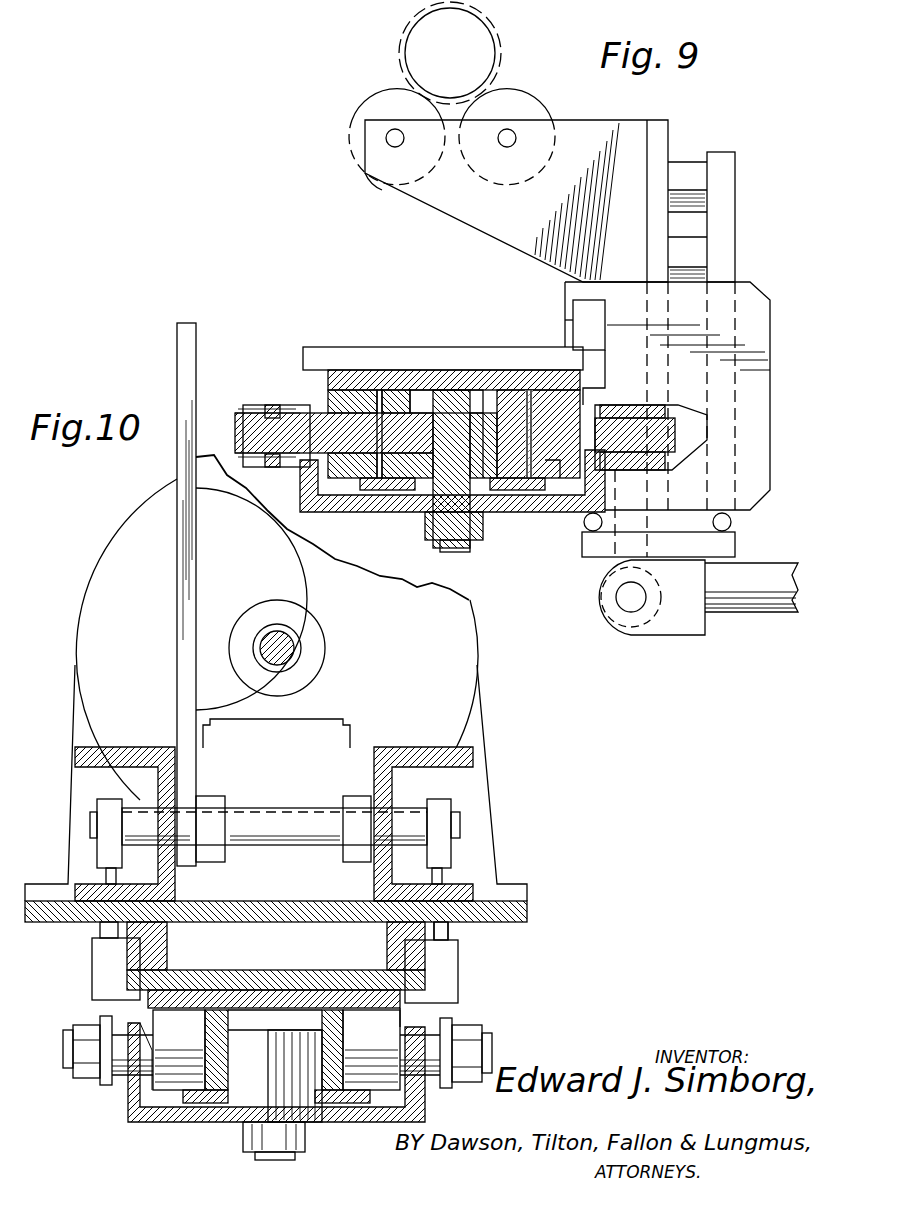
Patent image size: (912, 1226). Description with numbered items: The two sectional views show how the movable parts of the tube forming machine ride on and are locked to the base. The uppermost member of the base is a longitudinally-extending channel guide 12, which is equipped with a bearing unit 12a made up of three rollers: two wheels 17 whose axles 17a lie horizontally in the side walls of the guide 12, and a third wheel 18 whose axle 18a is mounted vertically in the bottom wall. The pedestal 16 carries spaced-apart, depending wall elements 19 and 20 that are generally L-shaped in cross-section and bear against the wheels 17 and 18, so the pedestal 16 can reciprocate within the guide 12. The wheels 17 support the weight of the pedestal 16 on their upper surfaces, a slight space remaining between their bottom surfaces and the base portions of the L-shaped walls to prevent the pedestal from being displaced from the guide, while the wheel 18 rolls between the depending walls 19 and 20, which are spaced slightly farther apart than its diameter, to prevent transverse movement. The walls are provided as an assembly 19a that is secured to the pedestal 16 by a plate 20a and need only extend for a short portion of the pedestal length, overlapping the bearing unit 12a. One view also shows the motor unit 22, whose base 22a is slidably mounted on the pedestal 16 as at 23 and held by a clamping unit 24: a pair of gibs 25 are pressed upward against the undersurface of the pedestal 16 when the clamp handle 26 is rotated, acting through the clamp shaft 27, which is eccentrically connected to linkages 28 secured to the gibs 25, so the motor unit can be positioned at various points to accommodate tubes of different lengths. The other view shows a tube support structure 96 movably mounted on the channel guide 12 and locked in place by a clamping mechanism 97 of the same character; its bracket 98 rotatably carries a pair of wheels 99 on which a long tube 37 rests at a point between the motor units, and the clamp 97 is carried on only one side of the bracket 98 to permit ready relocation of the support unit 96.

In FIG. 9, the guide 12 is at (382, 512).
In FIG. 10, the guide 12 is at (205, 1122).
In FIG. 9, the bearing unit 12a is at (491, 404).
In FIG. 10, the bearing unit 12a is at (175, 1097).
In FIG. 9, the pedestal 16 is at (398, 358).
In FIG. 10, the pedestal 16 is at (425, 982).
In FIG. 9, the wheels 17 is at (352, 478).
In FIG. 10, the wheels 17 is at (160, 1088).
In FIG. 9, the axles 17a is at (305, 415).
In FIG. 10, the axles 17a is at (115, 1030).
In FIG. 9, the wheel 18 is at (422, 420).
In FIG. 10, the wheel 18 is at (310, 1096).
In FIG. 9, the axle 18a is at (460, 550).
In FIG. 10, the axle 18a is at (262, 1096).
In FIG. 9, the depending wall element 19 is at (408, 398).
In FIG. 10, the depending wall element 19 is at (213, 1028).
In FIG. 9, the assembly 19a is at (461, 399).
In FIG. 10, the assembly 19a is at (278, 1013).
In FIG. 9, the depending wall element 20 is at (513, 390).
In FIG. 10, the depending wall element 20 is at (333, 1008).
In FIG. 9, the plate 20a is at (356, 372).
In FIG. 10, the plate 20a is at (331, 1007).
In FIG. 10, the motor unit 22 is at (118, 531).
In FIG. 10, the base 22a is at (528, 914).
In FIG. 10, the slidable mounting 23 is at (166, 968).
In FIG. 10, the clamping unit 24 is at (471, 962).
In FIG. 10, the gibs 25 is at (92, 953).
In FIG. 10, the clamp handle 26 is at (180, 448).
In FIG. 10, the clamp shaft 27 is at (410, 813).
In FIG. 10, the linkages 28 is at (106, 878).
In FIG. 9, the tube 37 is at (403, 45).
In FIG. 9, the tube support structure 96 is at (356, 142).
In FIG. 9, the clamping mechanism 97 is at (745, 612).
In FIG. 9, the bracket 98 is at (598, 135).
In FIG. 9, the wheels 99 is at (385, 100).